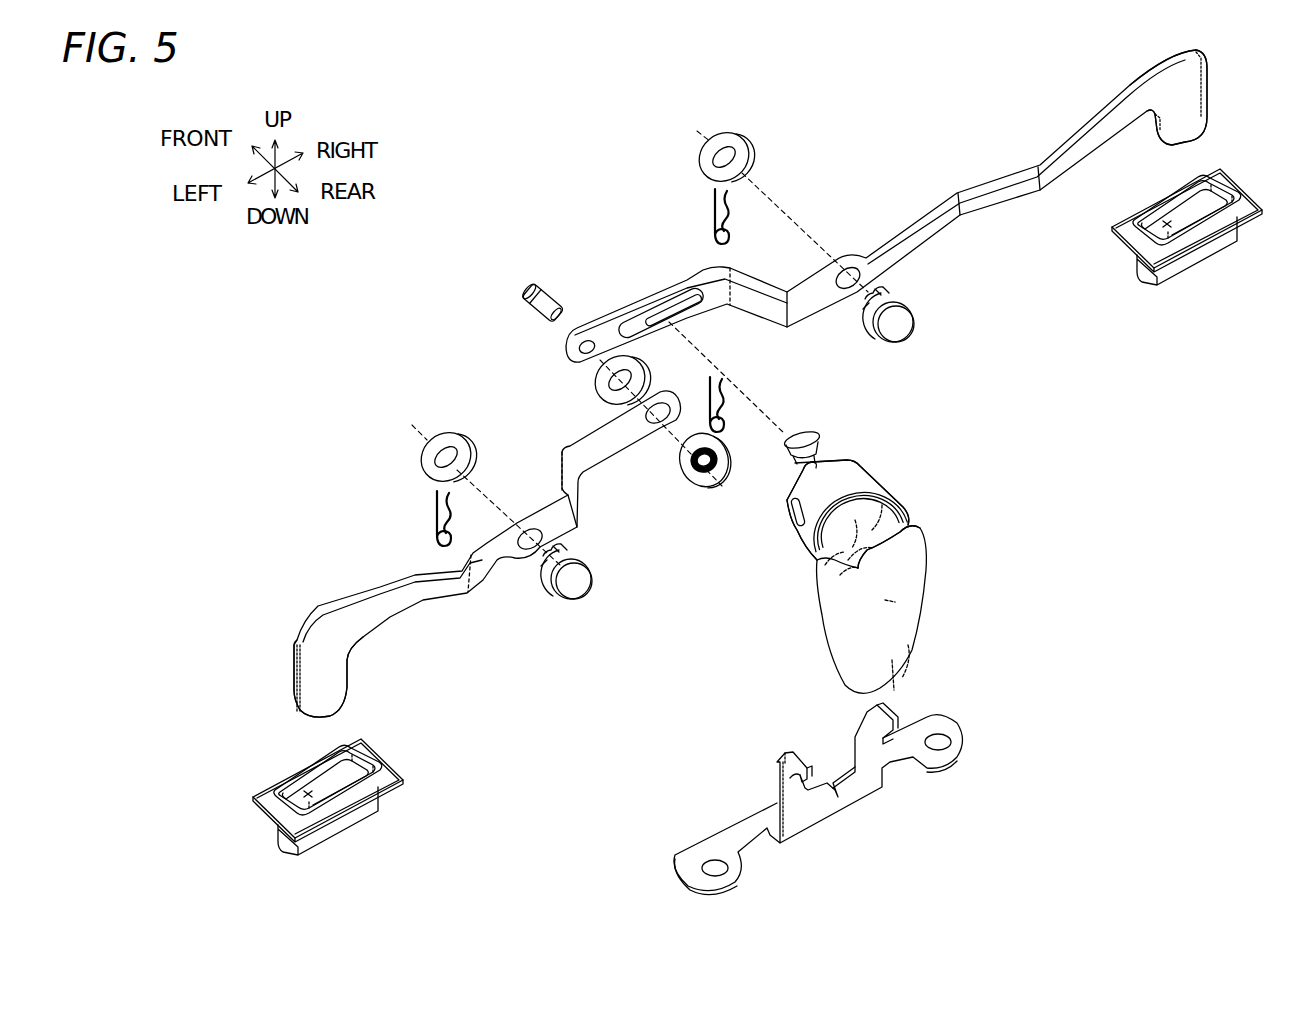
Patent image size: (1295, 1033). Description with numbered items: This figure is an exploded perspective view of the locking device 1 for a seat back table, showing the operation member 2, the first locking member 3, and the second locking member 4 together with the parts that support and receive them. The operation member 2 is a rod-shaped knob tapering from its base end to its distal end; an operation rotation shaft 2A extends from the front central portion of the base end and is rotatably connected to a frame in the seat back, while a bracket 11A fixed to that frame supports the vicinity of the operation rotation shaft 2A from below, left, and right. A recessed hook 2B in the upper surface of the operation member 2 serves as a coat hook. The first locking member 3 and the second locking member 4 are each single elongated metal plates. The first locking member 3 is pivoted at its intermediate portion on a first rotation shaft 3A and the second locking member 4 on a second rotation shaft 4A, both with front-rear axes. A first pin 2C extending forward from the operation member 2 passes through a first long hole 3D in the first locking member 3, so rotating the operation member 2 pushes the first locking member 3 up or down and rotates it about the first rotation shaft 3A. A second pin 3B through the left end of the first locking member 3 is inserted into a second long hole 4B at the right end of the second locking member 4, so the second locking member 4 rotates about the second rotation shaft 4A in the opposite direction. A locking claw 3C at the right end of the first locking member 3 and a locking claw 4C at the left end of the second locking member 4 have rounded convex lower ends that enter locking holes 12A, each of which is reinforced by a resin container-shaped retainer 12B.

The locking device 1 is at (1133, 530).
The operation member 2 is at (913, 612).
The operation rotation shaft 2A is at (787, 478).
The hook 2B is at (880, 520).
The first pin 2C is at (791, 430).
The first locking member 3 is at (1004, 178).
The first rotation shaft 3A is at (905, 332).
The second pin 3B is at (541, 290).
The locking claw 3C is at (1186, 128).
The first long hole 3D is at (666, 320).
The second locking member 4 is at (366, 596).
The second rotation shaft 4A is at (582, 589).
The second long hole 4B is at (657, 425).
The locking claw 4C is at (328, 692).
The bracket 11A is at (863, 783).
The locking hole 12A is at (1164, 224).
The retainer 12B is at (1208, 257).